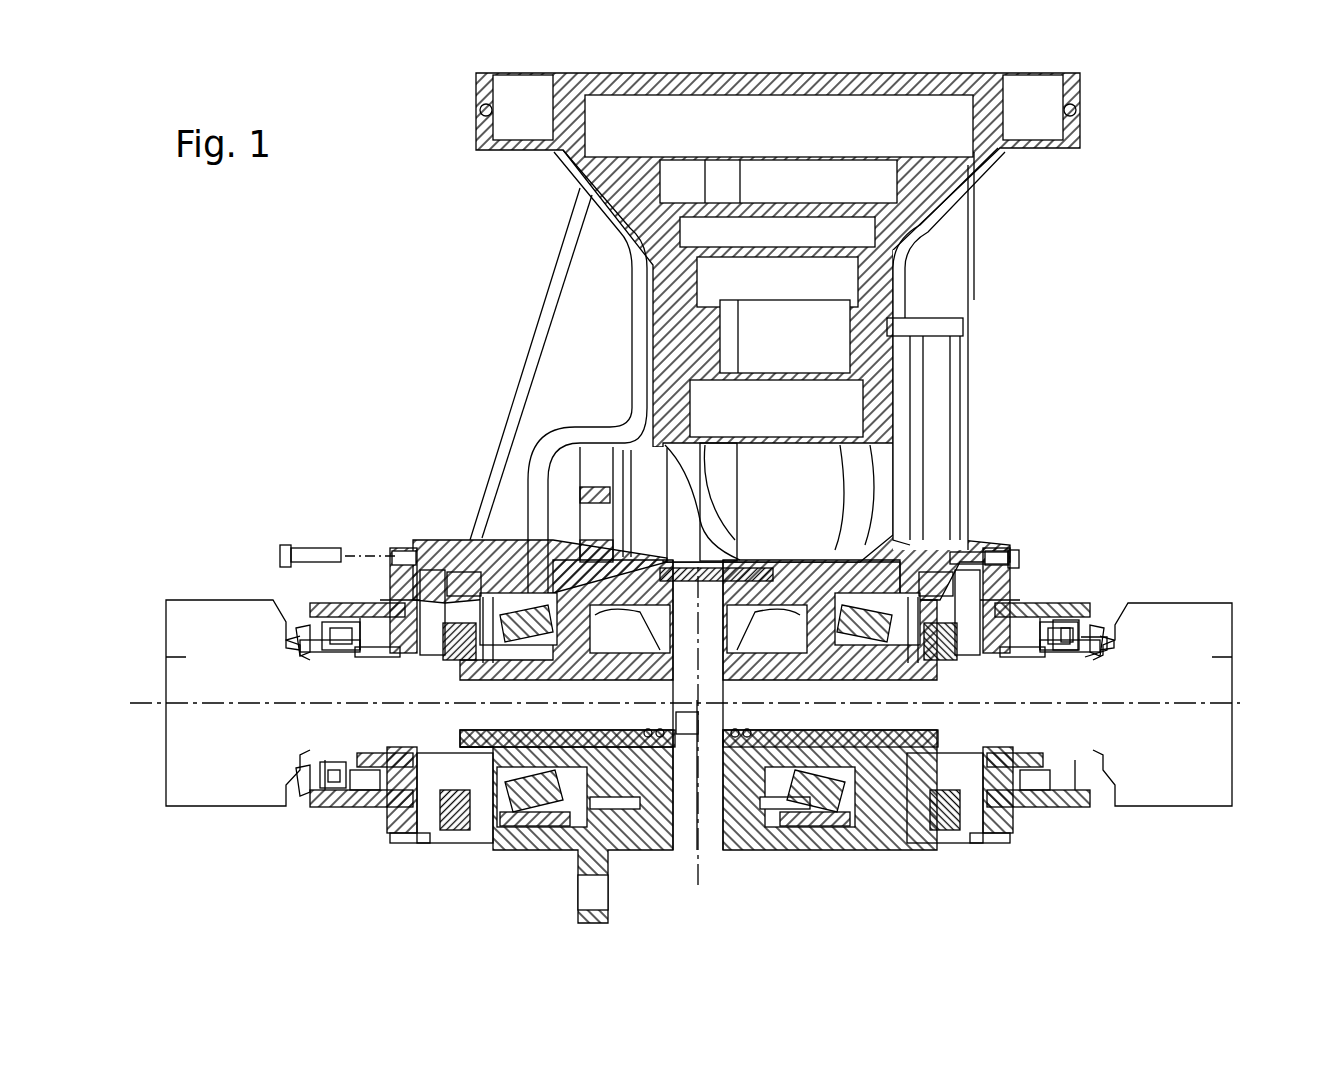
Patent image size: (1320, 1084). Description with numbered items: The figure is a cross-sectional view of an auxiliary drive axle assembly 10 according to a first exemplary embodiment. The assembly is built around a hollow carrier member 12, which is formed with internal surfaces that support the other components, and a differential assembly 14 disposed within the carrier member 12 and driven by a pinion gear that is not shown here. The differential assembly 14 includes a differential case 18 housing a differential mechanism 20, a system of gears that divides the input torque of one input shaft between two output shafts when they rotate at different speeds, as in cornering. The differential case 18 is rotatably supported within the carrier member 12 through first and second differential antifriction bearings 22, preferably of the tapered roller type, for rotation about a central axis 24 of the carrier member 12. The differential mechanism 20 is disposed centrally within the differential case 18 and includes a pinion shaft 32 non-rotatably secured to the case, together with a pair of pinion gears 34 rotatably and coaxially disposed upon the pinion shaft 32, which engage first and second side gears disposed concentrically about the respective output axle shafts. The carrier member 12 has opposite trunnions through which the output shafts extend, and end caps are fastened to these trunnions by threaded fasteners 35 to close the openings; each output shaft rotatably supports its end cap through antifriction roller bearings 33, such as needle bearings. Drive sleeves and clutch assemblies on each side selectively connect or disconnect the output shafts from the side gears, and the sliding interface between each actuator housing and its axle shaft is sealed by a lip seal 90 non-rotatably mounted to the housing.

The auxiliary drive axle assembly 10 is at (1145, 366).
The hollow carrier member 12 is at (520, 555).
The differential assembly 14 is at (718, 855).
The differential case 18 is at (628, 835).
The differential mechanism 20 is at (762, 633).
The differential antifriction bearings 22 is at (577, 825).
The central axis 24 is at (1168, 703).
The pinion shaft 32 is at (687, 723).
The antifriction roller bearings 33 is at (375, 655).
The pinion gears 34 is at (672, 624).
The threaded fasteners 35 is at (283, 548).
The lip seal 90 is at (1086, 625).